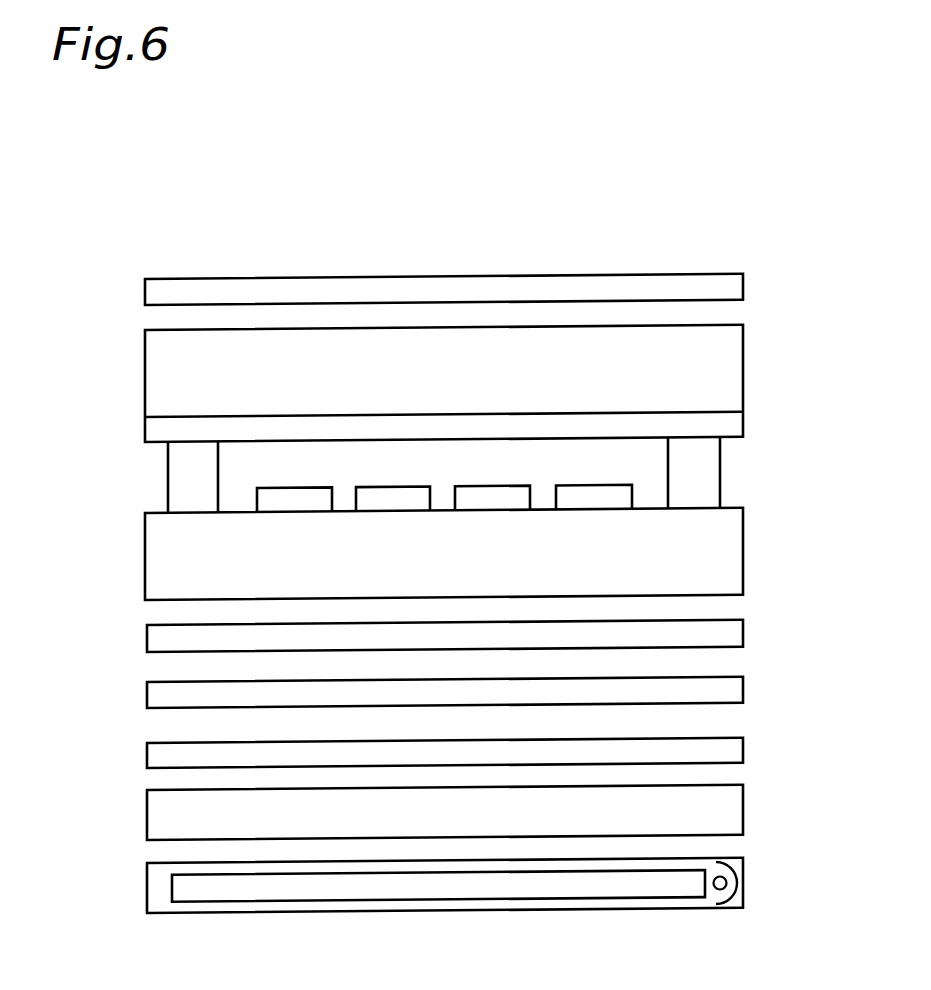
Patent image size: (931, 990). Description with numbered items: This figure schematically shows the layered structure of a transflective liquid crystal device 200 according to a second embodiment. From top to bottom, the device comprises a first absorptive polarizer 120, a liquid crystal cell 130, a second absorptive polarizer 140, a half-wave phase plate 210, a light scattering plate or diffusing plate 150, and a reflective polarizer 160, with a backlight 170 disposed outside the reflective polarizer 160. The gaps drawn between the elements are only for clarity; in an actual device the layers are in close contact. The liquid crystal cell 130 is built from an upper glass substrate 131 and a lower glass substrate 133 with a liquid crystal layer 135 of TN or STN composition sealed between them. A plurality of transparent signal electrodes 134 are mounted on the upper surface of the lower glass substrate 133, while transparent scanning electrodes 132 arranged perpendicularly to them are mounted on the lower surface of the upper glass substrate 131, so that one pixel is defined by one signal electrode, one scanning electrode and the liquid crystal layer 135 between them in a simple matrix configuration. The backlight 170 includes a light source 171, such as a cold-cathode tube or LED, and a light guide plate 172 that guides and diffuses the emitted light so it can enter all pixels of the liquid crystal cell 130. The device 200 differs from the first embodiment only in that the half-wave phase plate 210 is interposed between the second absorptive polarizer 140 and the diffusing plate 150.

The liquid crystal device 200 is at (428, 121).
The first absorptive polarizer 120 is at (145, 295).
The liquid crystal cell 130 is at (428, 462).
The upper glass substrate 131 is at (735, 368).
The scanning electrodes 132 is at (735, 422).
The lower glass substrate 133 is at (735, 542).
The signal electrodes 134 is at (633, 491).
The liquid crystal layer 135 is at (658, 458).
The second absorptive polarizer 140 is at (147, 641).
The λ/2 phase plate 210 is at (147, 701).
The light scattering plate 150 is at (147, 762).
The reflective polarizer 160 is at (147, 823).
The backlight 170 is at (147, 888).
The light source 171 is at (737, 907).
The light guide plate 172 is at (532, 900).